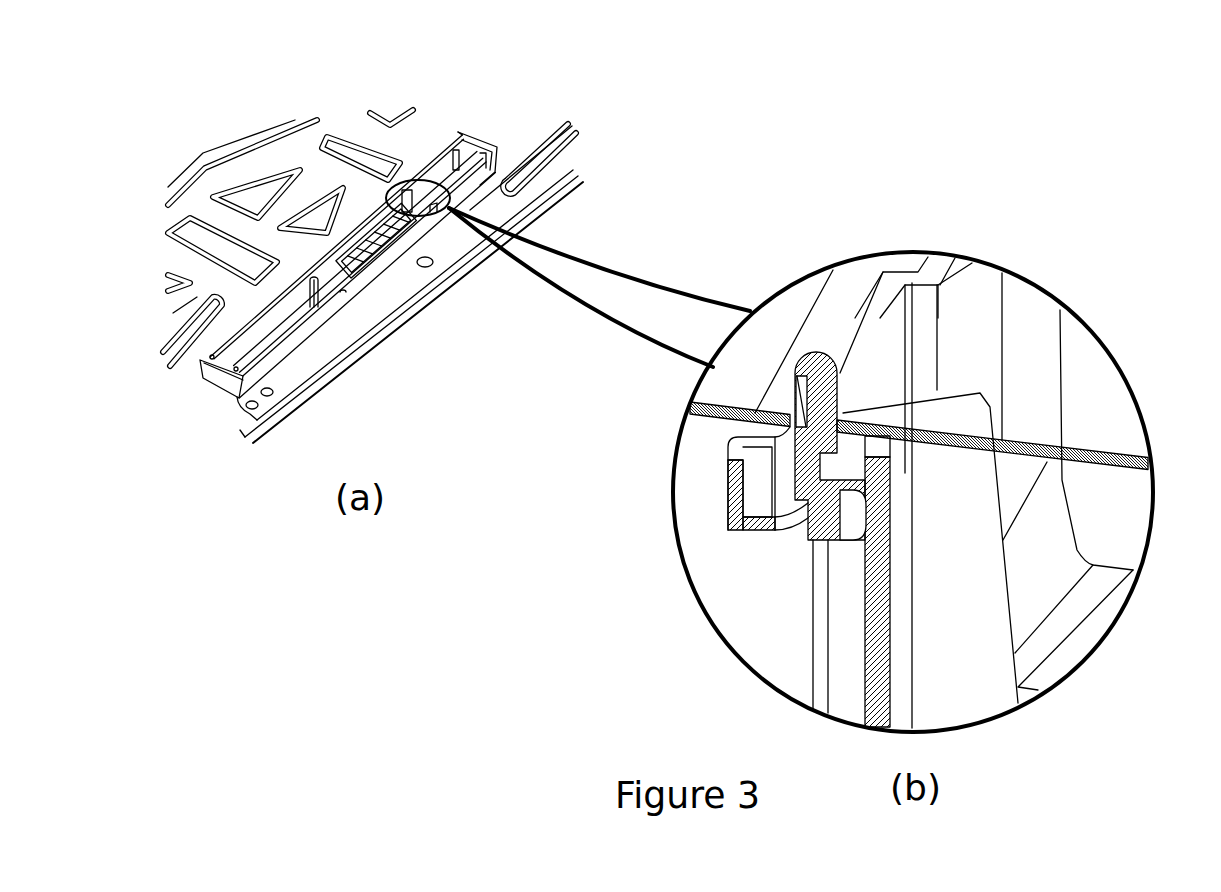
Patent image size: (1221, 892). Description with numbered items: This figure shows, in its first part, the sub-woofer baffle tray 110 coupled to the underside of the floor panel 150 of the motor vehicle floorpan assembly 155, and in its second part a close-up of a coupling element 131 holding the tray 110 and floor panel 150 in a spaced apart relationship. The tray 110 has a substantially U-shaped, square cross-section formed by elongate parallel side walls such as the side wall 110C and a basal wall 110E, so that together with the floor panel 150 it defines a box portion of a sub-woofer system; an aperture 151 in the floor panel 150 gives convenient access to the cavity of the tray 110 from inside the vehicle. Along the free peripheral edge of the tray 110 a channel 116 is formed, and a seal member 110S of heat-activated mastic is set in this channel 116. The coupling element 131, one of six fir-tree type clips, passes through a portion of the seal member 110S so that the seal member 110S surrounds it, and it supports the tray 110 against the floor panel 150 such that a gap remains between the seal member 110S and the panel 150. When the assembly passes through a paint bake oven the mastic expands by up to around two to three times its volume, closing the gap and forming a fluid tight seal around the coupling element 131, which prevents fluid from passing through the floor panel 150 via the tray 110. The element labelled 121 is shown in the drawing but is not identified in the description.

The sub-woofer baffle tray 110 is at (263, 368).
The seal member 110S is at (740, 450).
The side wall 110C is at (822, 643).
The basal wall 110E is at (1093, 620).
The channel 116 is at (757, 503).
The positioning pins 121 is at (343, 290).
The coupling element 131 is at (432, 205).
The floor panel 150 is at (365, 320).
The aperture 151 is at (385, 247).
The floorpan assembly 155 is at (183, 358).